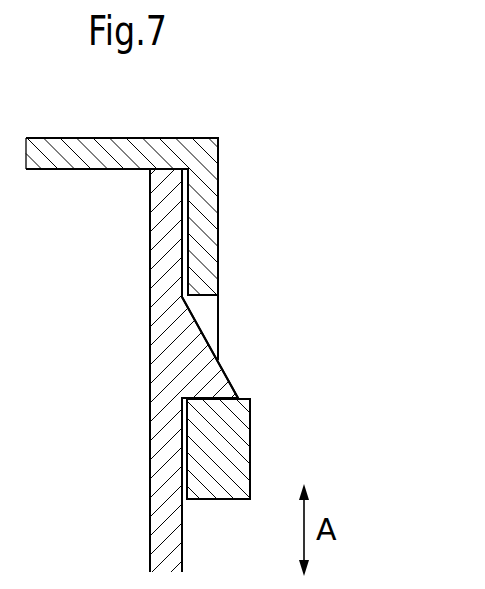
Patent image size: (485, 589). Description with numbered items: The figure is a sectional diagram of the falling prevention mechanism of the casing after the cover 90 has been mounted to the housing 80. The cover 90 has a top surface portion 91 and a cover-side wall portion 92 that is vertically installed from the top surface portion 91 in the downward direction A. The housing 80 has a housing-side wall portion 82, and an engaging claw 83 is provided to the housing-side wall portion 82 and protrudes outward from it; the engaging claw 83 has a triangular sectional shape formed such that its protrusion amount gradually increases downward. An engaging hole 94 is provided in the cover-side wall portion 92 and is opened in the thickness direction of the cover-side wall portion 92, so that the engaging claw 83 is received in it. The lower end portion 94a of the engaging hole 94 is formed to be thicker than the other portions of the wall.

The cover 90 is at (221, 165).
The top surface portion 91 is at (81, 145).
The cover-side wall portion 92 is at (208, 220).
The engaging hole 94 is at (211, 298).
The housing 80 is at (148, 211).
The housing-side wall portion 82 is at (160, 285).
The engaging claw 83 is at (223, 380).
The lower end portion of the engaging hole 94a is at (243, 453).